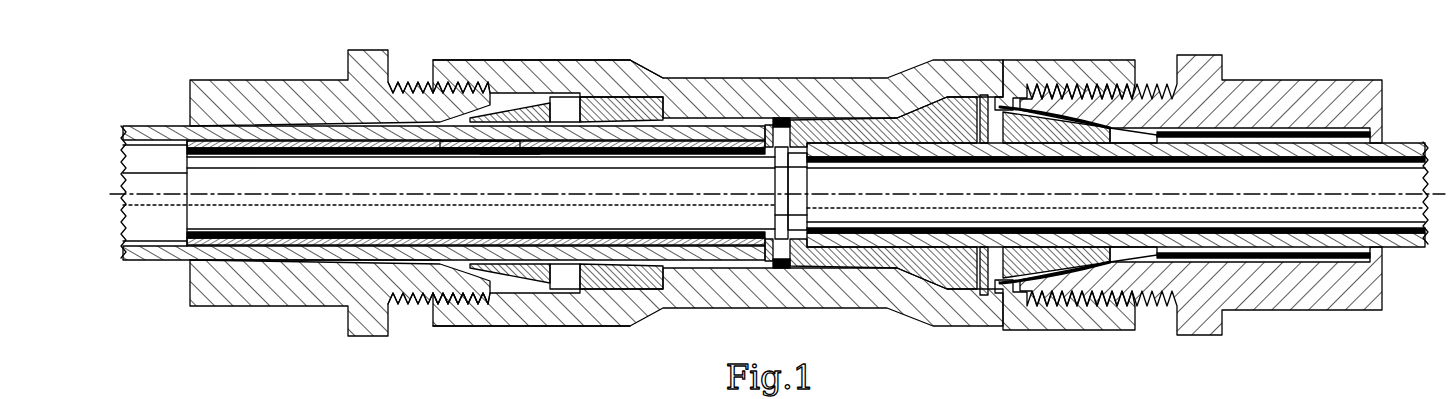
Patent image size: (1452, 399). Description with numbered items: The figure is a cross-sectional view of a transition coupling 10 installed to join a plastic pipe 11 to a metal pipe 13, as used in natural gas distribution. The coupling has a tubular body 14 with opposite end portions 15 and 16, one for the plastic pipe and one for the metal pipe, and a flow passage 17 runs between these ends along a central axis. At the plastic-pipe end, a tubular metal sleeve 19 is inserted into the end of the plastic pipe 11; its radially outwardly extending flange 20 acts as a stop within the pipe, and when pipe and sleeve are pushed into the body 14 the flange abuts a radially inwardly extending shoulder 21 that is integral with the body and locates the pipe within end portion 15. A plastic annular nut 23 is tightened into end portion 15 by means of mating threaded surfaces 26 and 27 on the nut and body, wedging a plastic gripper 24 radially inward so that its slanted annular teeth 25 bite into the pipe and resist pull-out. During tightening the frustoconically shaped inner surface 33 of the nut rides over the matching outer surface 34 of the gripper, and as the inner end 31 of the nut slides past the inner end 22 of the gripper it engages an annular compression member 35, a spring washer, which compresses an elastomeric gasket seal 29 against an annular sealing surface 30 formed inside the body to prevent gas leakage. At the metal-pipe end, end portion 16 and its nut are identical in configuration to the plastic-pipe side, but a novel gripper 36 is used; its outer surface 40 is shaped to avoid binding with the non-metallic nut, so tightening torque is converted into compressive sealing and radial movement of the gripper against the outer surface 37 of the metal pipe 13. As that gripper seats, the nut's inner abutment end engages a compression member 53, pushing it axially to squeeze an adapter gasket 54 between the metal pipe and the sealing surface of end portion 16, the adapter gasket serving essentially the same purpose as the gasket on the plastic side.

The transition coupling 10 is at (884, 56).
The plastic pipe 11 is at (150, 125).
The metal pipe 13 is at (1400, 140).
The tubular body 14 is at (722, 100).
The end portion 15 is at (503, 60).
The end portion 16 is at (1100, 72).
The flow passage 17 is at (850, 289).
The tubular metal sleeve 19 is at (280, 262).
The flange 20 is at (760, 125).
The shoulder 21 is at (778, 267).
The inner end 22 is at (578, 268).
The plastic annular nut 23 is at (245, 80).
The plastic gripper 24 is at (497, 156).
The annular teeth 25 is at (507, 233).
The threaded surface 26 is at (403, 82).
The threaded surface 27 is at (448, 92).
The elastomeric gasket seal 29 is at (600, 97).
The annular sealing surface 30 is at (647, 110).
The inner end 31 is at (545, 293).
The frustoconically shaped inner surface 33 is at (448, 156).
The outer surface 34 is at (485, 292).
The annular compression member 35 is at (580, 97).
The gripper 36 is at (1082, 152).
The outer surface 37 is at (1085, 300).
The outer surface 40 is at (1078, 253).
The compression member 53 is at (985, 95).
The adapter gasket 54 is at (938, 143).